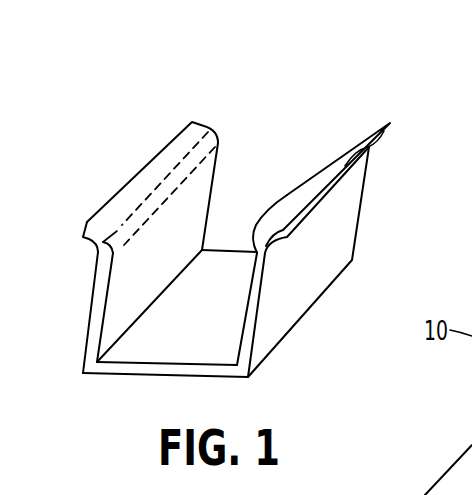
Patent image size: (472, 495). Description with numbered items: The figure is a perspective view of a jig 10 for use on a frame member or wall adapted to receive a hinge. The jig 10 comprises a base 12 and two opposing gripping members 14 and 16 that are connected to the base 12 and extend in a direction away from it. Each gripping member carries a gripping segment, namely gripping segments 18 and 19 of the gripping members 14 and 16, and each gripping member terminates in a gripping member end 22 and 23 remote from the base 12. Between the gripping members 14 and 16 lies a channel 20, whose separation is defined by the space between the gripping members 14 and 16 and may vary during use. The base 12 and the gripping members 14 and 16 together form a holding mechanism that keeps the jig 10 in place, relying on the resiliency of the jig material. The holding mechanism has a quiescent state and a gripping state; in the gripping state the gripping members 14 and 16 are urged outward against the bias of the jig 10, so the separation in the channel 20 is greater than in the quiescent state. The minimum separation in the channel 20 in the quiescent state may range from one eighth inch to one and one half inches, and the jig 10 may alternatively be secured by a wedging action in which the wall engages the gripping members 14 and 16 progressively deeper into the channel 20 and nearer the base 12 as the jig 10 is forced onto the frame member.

The jig 10 is at (182, 88).
The base 12 is at (163, 368).
The gripping member 14 is at (326, 249).
The gripping member 16 is at (97, 315).
The gripping segment 18 is at (120, 229).
The gripping segment 19 is at (262, 217).
The channel 20 is at (248, 200).
The gripping member end 22 is at (110, 201).
The gripping member end 23 is at (372, 143).